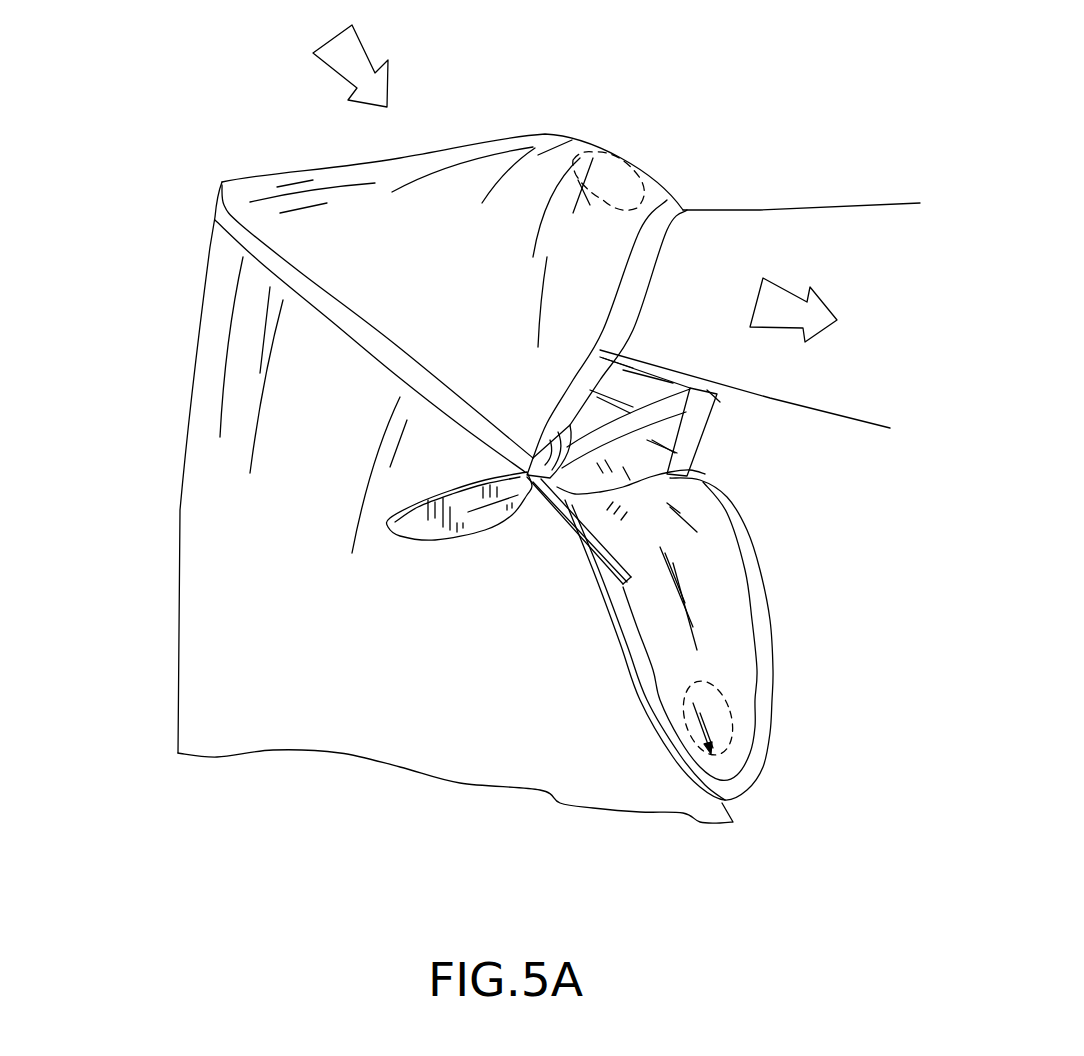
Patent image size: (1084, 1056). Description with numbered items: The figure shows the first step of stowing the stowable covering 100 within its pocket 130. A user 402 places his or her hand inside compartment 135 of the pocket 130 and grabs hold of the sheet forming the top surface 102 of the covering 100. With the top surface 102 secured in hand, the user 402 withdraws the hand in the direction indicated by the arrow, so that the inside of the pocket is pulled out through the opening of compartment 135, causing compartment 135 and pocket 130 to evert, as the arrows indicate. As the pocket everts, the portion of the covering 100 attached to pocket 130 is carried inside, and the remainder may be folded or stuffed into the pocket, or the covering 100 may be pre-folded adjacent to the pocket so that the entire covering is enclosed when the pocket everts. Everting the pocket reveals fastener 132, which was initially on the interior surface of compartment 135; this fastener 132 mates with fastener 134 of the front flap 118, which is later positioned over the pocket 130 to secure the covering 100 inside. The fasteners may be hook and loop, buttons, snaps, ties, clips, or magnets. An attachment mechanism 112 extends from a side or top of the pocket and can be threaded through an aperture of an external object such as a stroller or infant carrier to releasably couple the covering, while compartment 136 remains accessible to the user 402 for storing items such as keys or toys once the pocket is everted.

The covering 100 is at (137, 665).
The top surface 102 is at (363, 745).
The attachment mechanism 112 is at (433, 530).
The front flap 118 is at (732, 623).
The pocket 130 is at (473, 170).
The fastener 132 is at (613, 178).
The fastener 134 is at (723, 735).
The compartment 135 is at (697, 400).
The compartment 136 is at (655, 470).
The user 402 is at (725, 232).